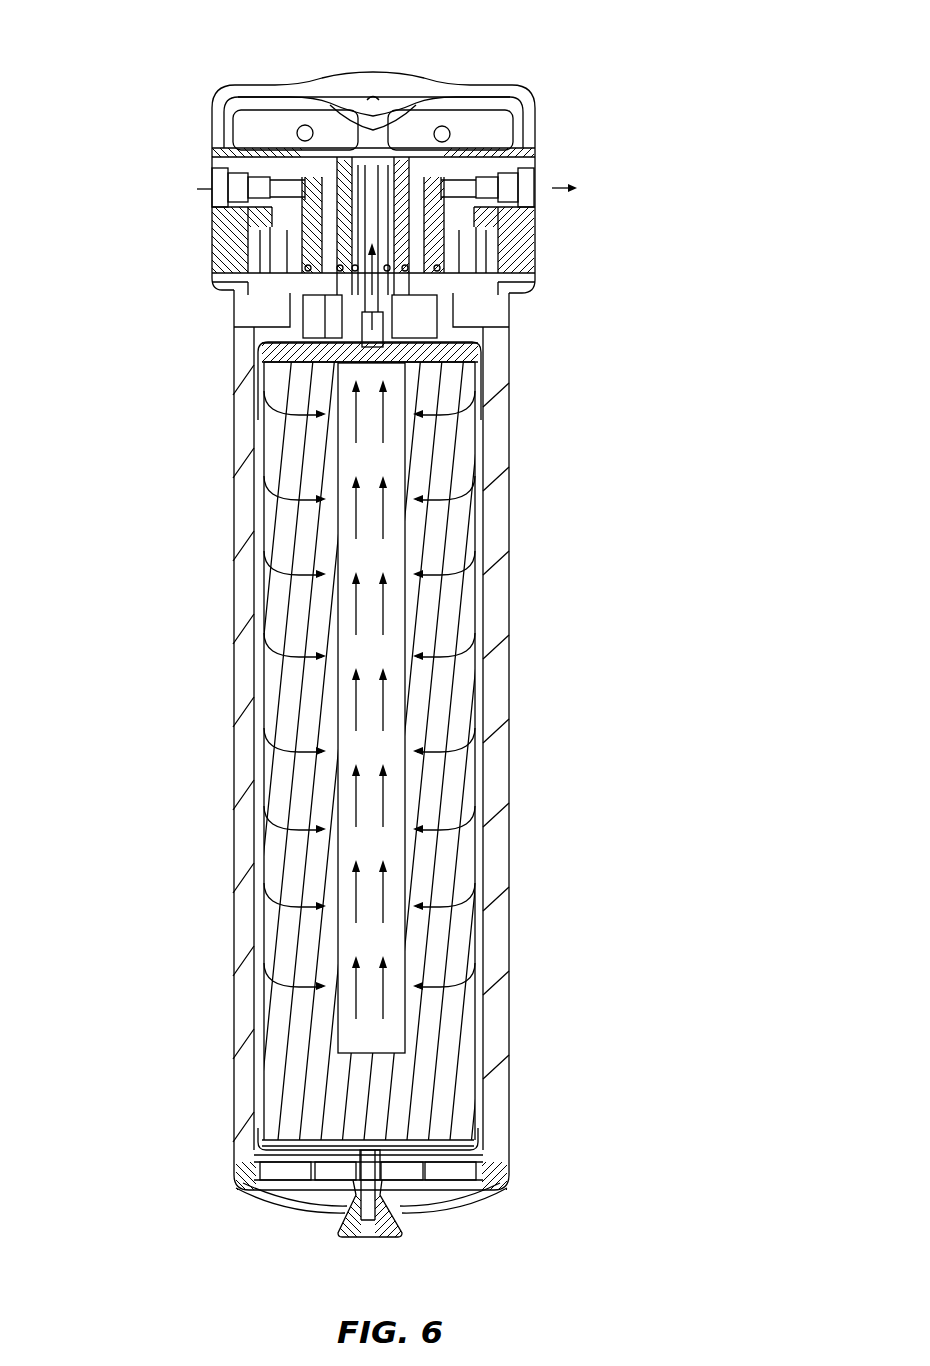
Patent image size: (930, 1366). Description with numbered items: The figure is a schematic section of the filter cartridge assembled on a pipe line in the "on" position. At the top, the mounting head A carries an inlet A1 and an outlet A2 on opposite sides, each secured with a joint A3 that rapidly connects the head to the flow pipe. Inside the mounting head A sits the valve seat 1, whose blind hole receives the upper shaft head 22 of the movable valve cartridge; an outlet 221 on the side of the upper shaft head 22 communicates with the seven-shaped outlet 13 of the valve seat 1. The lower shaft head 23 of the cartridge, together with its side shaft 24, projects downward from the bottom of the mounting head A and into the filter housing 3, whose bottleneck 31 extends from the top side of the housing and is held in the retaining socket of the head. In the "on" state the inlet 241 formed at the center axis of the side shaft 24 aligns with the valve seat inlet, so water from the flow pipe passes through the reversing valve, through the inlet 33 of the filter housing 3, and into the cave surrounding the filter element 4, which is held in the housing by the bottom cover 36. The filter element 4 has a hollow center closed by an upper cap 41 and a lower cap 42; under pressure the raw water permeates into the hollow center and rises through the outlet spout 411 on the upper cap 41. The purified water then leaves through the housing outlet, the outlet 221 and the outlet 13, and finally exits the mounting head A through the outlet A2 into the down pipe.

The valve seat 1 is at (428, 140).
The outlet 13 is at (458, 150).
The upper shaft head 22 is at (362, 168).
The outlet 221 is at (386, 170).
The lower shaft head 23 is at (523, 207).
The side shaft 24 is at (312, 225).
The inlet 241 is at (305, 178).
The filter housing 3 is at (242, 400).
The bottleneck 31 is at (240, 311).
The inlet 33 is at (300, 276).
The bottom cover 36 is at (490, 1183).
The filter element 4 is at (282, 481).
The upper cap 41 is at (480, 350).
The outlet spout 411 is at (425, 302).
The lower cap 42 is at (472, 1133).
The mounting head A is at (245, 160).
The inlet A1 is at (215, 181).
The outlet A2 is at (525, 184).
The joint A3 is at (222, 247).